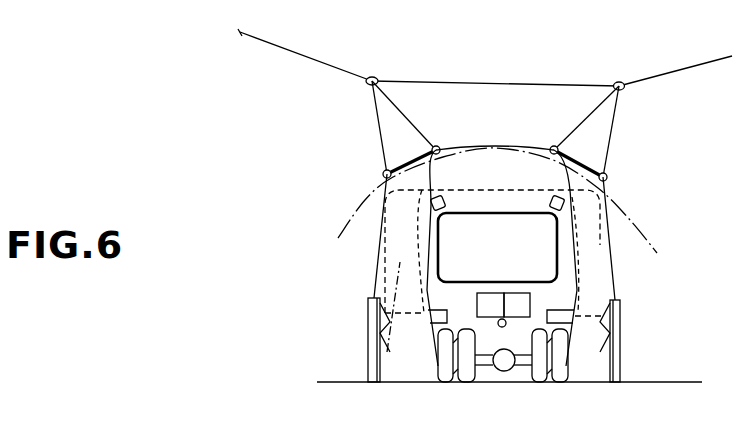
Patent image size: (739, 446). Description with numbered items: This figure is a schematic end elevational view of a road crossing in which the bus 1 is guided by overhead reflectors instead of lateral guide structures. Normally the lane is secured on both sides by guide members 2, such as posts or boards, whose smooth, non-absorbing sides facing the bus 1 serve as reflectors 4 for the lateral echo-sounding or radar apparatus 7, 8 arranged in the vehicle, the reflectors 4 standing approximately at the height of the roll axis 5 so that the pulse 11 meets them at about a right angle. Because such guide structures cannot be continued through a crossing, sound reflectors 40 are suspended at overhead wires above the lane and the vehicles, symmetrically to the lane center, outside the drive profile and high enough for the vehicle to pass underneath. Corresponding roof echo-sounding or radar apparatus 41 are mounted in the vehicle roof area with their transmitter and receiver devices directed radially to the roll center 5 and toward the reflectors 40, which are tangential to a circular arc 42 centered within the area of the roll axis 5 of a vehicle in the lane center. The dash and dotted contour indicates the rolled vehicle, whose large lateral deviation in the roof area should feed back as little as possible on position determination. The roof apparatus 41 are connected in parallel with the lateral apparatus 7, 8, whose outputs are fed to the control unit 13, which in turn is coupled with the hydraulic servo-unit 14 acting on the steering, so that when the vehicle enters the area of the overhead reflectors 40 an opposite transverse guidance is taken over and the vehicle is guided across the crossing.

The bus 1 is at (582, 266).
The guide members 2 is at (366, 316).
The reflectors 4 is at (600, 342).
The roll axis 5 is at (503, 327).
The echo-sounding or radar apparatus 7 is at (565, 311).
The echo-sounding or radar apparatus 8 is at (441, 311).
The pulse 11 is at (428, 186).
The control unit 13 is at (490, 305).
The hydraulic servo-unit 14 is at (517, 305).
The sound reflectors 40 is at (413, 158).
The roof echo-sounding or radar apparatus 41 is at (548, 208).
The circular arc 42 is at (631, 218).